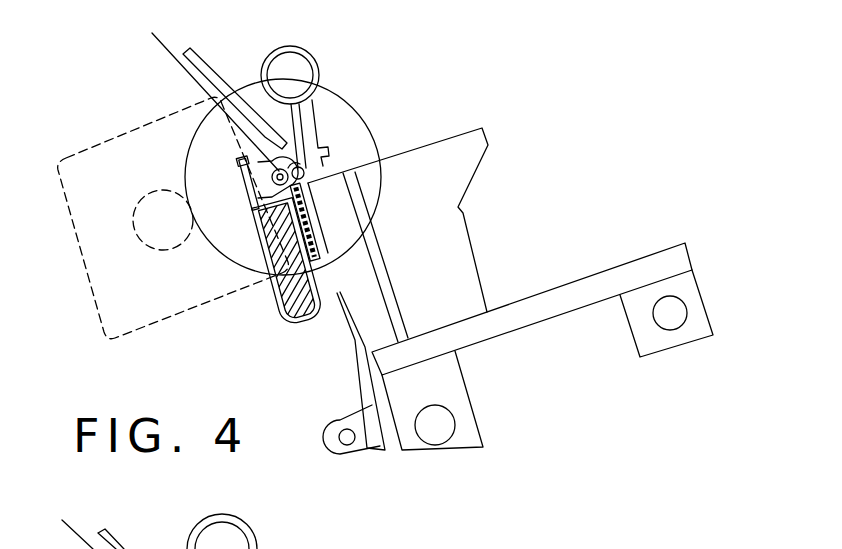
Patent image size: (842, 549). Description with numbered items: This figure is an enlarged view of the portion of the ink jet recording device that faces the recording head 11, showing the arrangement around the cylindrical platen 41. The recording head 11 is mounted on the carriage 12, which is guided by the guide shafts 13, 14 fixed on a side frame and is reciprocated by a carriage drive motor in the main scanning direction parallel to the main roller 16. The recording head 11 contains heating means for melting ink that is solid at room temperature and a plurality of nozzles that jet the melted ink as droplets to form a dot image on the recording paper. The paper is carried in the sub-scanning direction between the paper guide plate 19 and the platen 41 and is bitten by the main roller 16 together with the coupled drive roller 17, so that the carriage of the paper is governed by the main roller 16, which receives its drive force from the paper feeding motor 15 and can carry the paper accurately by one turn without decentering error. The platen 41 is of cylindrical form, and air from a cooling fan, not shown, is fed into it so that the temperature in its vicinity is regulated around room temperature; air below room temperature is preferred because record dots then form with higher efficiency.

The recording head 11 is at (337, 190).
The carriage 12 is at (623, 268).
The guide shaft 13 is at (440, 437).
The guide shaft 14 is at (670, 322).
The paper feeding motor 15 is at (108, 168).
The main roller 16 is at (248, 106).
The drive roller 17 is at (322, 150).
The paper guide plate 19 is at (307, 260).
The platen 41 is at (268, 274).